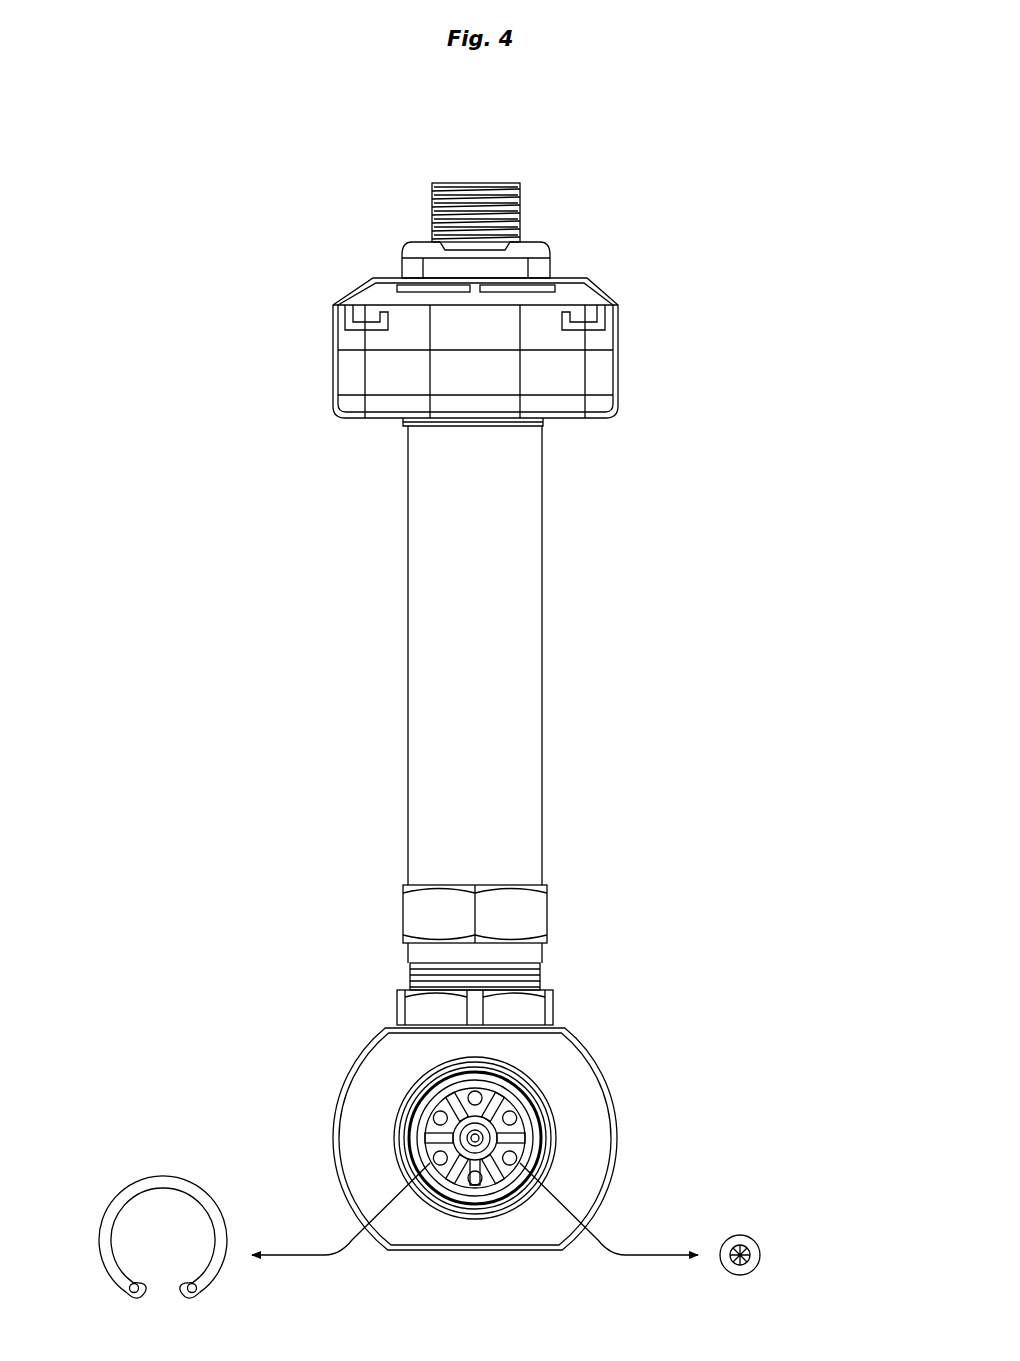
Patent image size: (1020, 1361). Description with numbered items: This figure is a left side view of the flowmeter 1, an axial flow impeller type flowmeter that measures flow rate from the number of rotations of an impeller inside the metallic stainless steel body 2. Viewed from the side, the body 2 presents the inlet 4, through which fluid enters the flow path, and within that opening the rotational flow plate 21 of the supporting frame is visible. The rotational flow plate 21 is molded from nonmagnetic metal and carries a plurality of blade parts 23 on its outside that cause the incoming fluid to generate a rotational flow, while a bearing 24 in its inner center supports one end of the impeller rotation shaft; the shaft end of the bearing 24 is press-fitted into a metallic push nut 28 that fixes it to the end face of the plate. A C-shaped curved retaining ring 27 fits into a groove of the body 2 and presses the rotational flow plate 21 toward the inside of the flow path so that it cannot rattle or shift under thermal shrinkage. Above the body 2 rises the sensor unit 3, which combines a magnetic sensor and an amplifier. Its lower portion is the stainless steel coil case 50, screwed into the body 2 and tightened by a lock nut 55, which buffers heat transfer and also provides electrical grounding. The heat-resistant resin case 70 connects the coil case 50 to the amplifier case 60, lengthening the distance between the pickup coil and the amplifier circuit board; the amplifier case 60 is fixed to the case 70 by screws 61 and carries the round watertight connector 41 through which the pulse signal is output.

The flowmeter 1 is at (725, 128).
The body 2 is at (592, 1062).
The sensor unit 3 is at (590, 598).
The inlet 4 is at (435, 1078).
The rotational flow plate 21 is at (510, 1128).
The blade parts 23 is at (437, 1100).
The bearing 24 is at (475, 1178).
The retaining ring 27 is at (142, 1185).
The push nut 28 is at (745, 1236).
The round watertight connector 41 is at (493, 183).
The coil case 50 is at (404, 914).
The lock nut 55 is at (548, 990).
The amplifier case 60 is at (577, 283).
The screws 61 is at (345, 300).
The resin case 70 is at (408, 668).